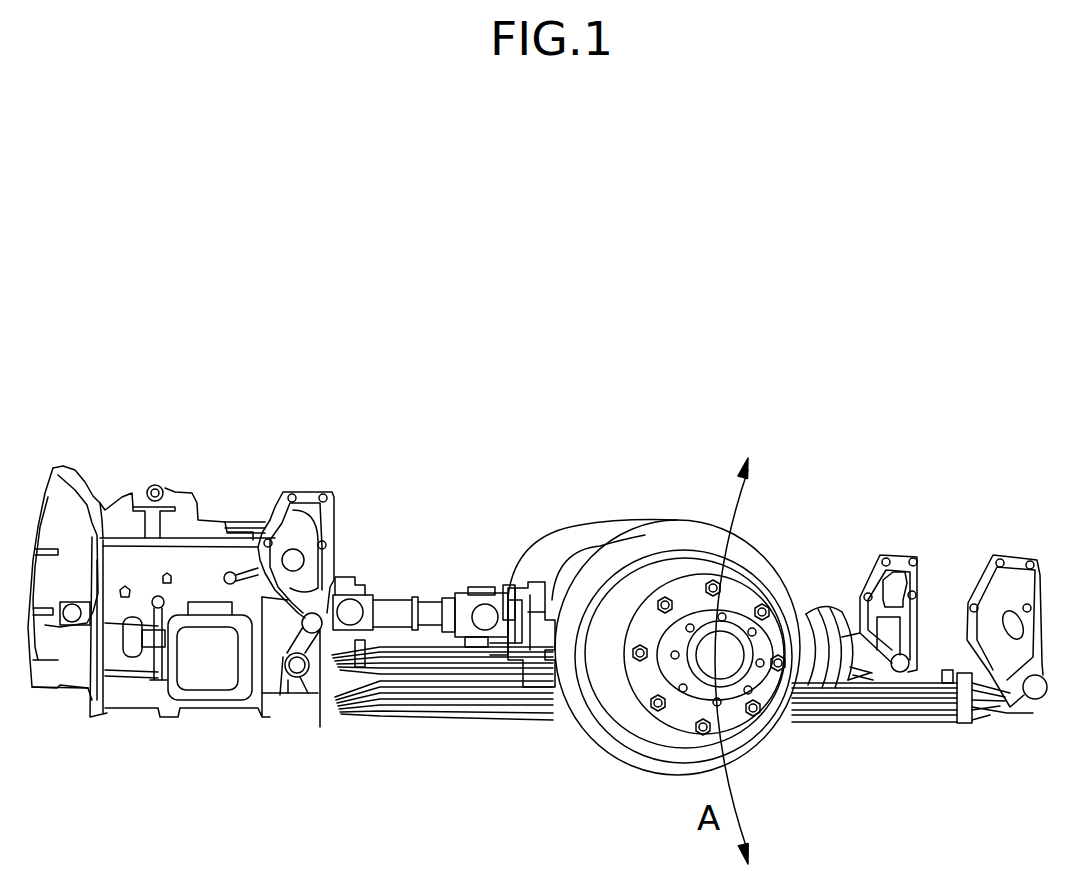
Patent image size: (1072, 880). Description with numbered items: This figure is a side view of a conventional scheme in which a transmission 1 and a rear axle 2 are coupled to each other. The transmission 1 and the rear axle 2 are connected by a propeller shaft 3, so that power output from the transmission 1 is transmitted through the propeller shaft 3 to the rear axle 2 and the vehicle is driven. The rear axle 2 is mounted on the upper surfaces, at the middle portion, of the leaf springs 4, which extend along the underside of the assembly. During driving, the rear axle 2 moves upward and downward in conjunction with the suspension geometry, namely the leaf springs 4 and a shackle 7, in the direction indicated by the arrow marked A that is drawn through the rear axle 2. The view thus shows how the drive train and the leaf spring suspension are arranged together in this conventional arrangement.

The transmission 1 is at (152, 490).
The rear axle 2 is at (541, 579).
The propeller shaft 3 is at (397, 602).
The leaf springs 4 is at (862, 728).
The shackle 7 is at (312, 706).